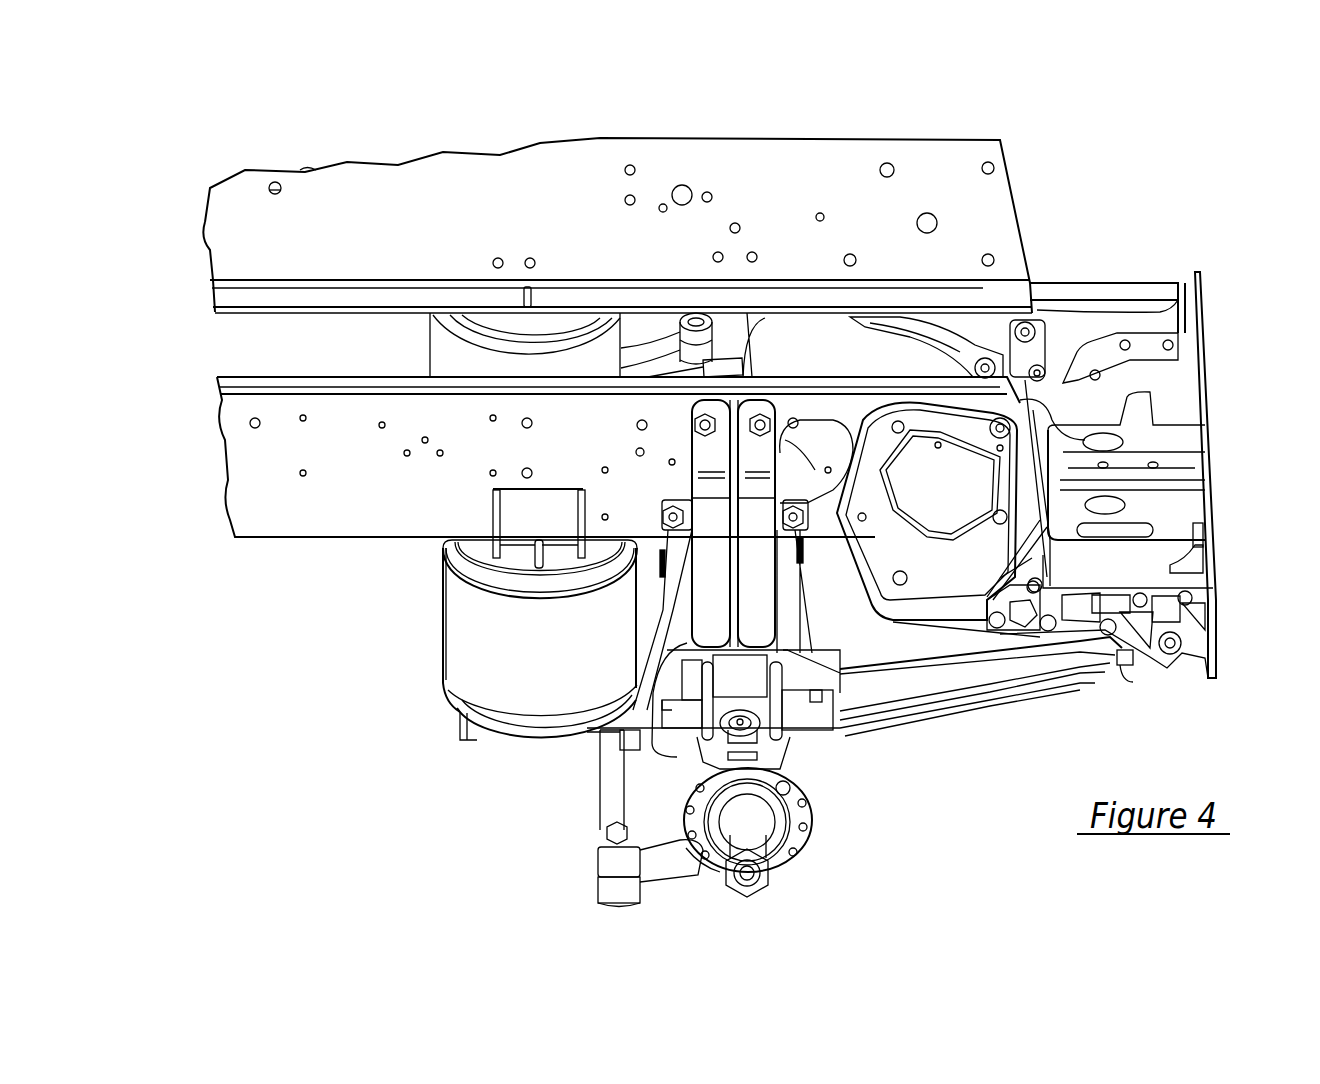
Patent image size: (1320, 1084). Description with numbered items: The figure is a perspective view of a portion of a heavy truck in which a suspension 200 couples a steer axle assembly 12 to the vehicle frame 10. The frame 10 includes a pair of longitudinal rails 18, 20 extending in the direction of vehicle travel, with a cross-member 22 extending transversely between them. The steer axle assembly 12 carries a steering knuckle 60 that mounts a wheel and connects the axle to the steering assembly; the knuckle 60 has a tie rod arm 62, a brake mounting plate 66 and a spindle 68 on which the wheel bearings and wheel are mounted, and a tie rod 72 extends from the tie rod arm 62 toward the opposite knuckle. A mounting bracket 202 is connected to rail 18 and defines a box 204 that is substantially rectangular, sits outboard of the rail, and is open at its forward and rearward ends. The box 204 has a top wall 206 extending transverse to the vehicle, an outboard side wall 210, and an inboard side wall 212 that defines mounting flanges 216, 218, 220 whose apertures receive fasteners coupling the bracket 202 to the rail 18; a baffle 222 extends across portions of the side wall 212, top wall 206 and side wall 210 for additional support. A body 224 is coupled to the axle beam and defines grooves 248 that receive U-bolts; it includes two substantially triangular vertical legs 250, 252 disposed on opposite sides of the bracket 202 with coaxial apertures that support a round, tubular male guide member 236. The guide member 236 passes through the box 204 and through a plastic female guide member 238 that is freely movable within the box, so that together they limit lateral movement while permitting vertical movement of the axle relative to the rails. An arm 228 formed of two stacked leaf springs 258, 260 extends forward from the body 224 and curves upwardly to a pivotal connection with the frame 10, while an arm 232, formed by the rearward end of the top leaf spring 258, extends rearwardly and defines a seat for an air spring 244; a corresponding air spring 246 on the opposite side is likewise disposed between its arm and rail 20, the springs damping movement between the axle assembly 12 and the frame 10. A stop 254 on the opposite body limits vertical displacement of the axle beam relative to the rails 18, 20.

The vehicle frame 10 is at (312, 152).
The steer axle assembly 12 is at (811, 862).
The longitudinal rail 18 is at (232, 243).
The longitudinal rail 20 is at (257, 468).
The cross-member 22 is at (1183, 417).
The steering knuckle 60 is at (808, 812).
The tie rod arm 62 is at (680, 865).
The brake mounting plate 66 is at (718, 868).
The spindle 68 is at (758, 842).
The tie rod 72 is at (617, 805).
The suspension 200 is at (950, 777).
The mounting bracket 202 is at (748, 407).
The box 204 is at (758, 627).
The top wall 206 is at (763, 457).
The side wall 210 is at (712, 517).
The side wall 212 is at (778, 428).
The mounting flange 216 is at (690, 517).
The mounting flange 218 is at (848, 492).
The mounting flange 220 is at (700, 422).
The baffle 222 is at (770, 580).
The body 224 is at (797, 682).
The arm 228 is at (1033, 697).
The arm 232 is at (460, 728).
The guide member 236 is at (833, 543).
The guide member 238 is at (802, 575).
The spring 244 is at (467, 633).
The spring 246 is at (432, 340).
The groove 248 is at (602, 763).
The leg 250 is at (663, 643).
The leg 252 is at (840, 656).
The stop 254 is at (728, 372).
The leaf spring 258 is at (1120, 662).
The leaf spring 260 is at (1080, 684).